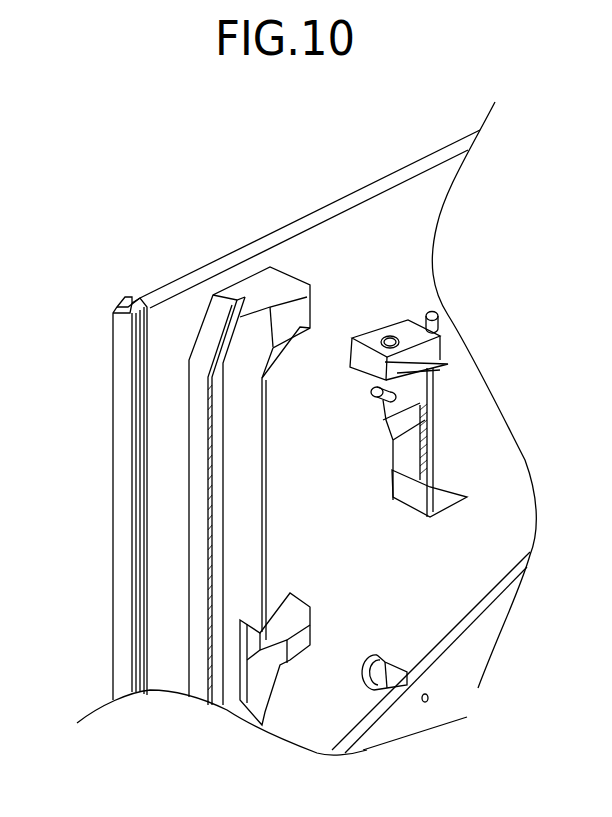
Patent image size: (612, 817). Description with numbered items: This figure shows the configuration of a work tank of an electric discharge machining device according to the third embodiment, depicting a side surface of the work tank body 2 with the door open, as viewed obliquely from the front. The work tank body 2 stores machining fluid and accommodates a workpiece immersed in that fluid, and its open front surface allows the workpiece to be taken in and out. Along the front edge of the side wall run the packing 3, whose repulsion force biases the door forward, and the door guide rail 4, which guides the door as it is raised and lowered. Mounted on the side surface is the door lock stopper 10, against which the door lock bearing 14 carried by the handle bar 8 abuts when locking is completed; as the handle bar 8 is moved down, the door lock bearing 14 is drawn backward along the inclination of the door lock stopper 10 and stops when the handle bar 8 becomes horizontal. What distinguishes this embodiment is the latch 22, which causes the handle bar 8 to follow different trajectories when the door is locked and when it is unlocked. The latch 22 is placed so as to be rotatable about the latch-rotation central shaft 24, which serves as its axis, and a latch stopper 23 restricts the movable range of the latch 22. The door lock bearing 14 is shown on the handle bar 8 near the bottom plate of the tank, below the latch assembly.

The work tank body 2 is at (337, 208).
The packing 3 is at (120, 342).
The door guide rail 4 is at (208, 330).
The handle bar 8 is at (447, 683).
The door lock stopper 10 is at (443, 492).
The door lock bearing 14 is at (393, 677).
The latch 22 is at (428, 365).
The latch stopper 23 is at (415, 315).
The latch-rotation central shaft 24 is at (395, 345).